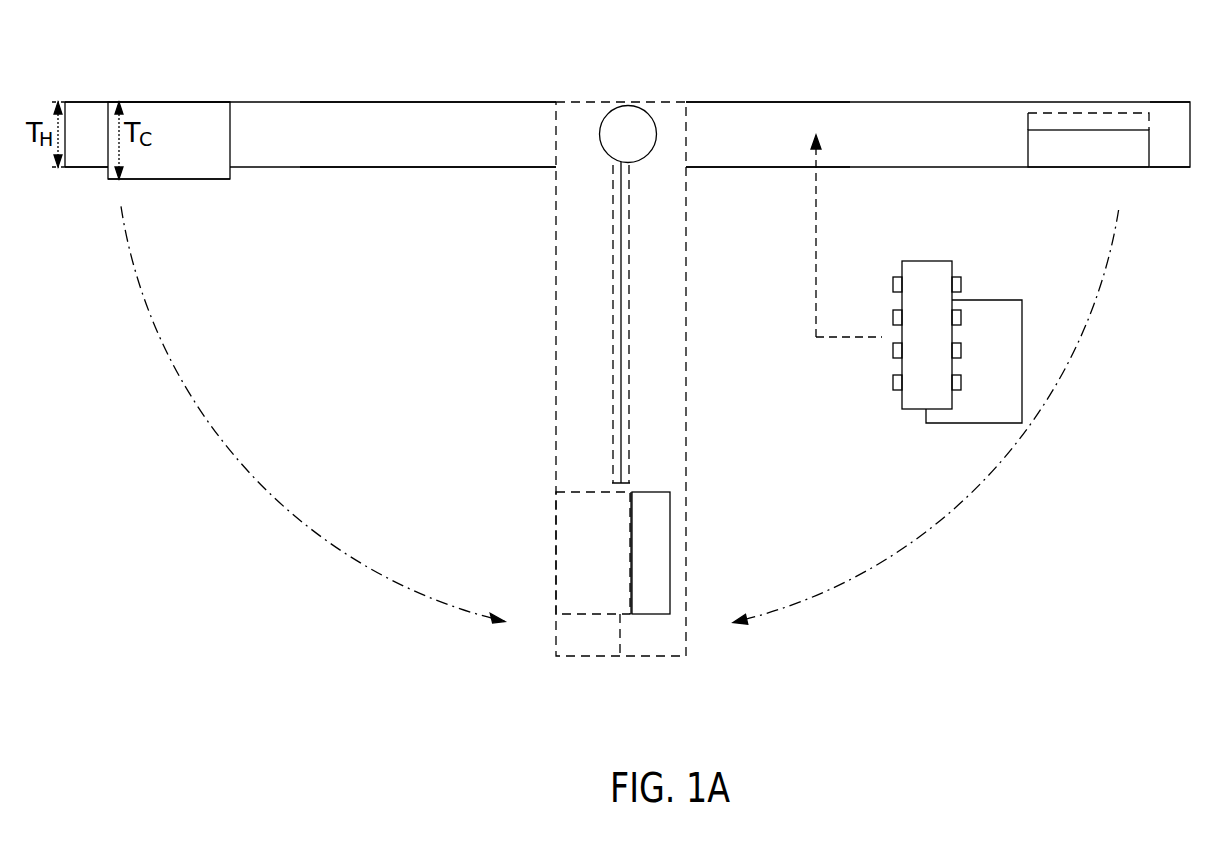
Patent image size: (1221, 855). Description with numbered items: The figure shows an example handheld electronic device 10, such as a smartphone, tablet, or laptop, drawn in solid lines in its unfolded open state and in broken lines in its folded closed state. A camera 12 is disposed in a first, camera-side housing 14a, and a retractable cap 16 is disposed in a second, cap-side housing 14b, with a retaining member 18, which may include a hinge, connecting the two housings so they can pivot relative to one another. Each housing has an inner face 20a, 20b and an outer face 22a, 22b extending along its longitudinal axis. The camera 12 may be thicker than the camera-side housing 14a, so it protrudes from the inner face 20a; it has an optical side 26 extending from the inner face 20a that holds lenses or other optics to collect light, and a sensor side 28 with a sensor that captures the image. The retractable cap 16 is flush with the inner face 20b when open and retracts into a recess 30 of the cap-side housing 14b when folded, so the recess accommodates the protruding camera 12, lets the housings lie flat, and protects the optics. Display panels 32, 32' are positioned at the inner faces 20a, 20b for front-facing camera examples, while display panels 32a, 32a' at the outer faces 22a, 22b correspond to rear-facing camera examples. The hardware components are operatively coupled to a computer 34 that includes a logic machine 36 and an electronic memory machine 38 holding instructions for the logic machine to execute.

The handheld electronic device 10 is at (157, 591).
The camera 12 is at (171, 151).
The camera-side housing 14a is at (382, 146).
The cap-side housing 14b is at (840, 146).
The retractable cap 16 is at (1078, 156).
The retaining member 18 is at (608, 120).
The inner face 20a is at (87, 168).
The inner face 20b is at (1178, 168).
The outer face 22a is at (87, 100).
The outer face 22b is at (1175, 100).
The optical side 26 is at (205, 180).
The sensor side 28 is at (186, 100).
The recess 30 is at (1068, 118).
The display panel 32 is at (428, 200).
The display panel 32a is at (428, 67).
The display panel 32a' is at (768, 66).
The display panel 32' is at (768, 200).
The computer 34 is at (1022, 266).
The logic machine 36 is at (964, 372).
The electronic memory machine 38 is at (916, 347).